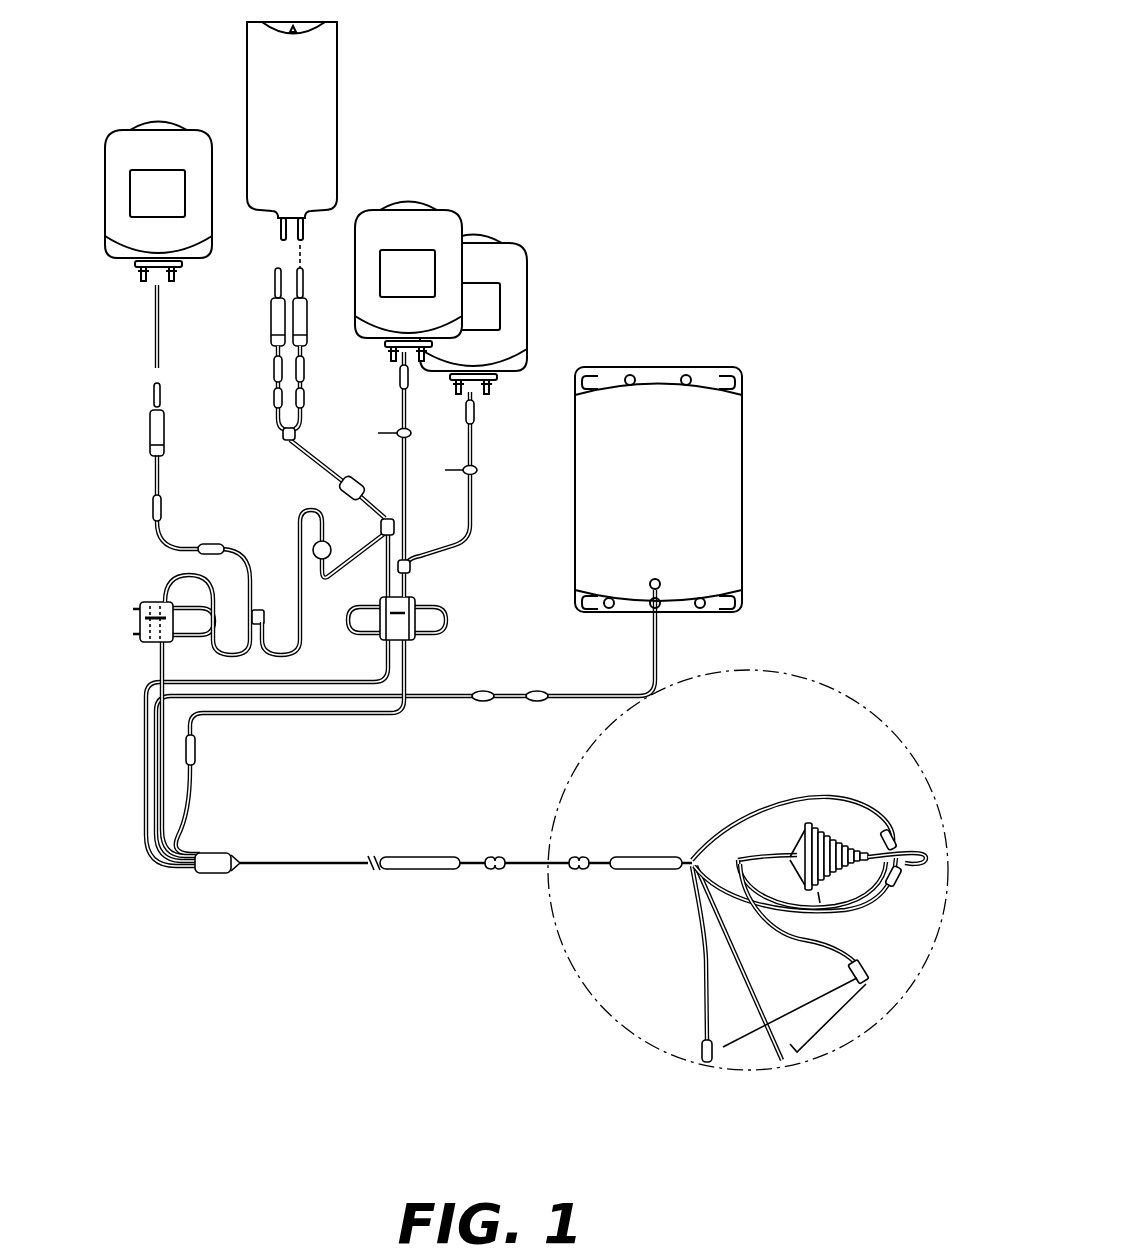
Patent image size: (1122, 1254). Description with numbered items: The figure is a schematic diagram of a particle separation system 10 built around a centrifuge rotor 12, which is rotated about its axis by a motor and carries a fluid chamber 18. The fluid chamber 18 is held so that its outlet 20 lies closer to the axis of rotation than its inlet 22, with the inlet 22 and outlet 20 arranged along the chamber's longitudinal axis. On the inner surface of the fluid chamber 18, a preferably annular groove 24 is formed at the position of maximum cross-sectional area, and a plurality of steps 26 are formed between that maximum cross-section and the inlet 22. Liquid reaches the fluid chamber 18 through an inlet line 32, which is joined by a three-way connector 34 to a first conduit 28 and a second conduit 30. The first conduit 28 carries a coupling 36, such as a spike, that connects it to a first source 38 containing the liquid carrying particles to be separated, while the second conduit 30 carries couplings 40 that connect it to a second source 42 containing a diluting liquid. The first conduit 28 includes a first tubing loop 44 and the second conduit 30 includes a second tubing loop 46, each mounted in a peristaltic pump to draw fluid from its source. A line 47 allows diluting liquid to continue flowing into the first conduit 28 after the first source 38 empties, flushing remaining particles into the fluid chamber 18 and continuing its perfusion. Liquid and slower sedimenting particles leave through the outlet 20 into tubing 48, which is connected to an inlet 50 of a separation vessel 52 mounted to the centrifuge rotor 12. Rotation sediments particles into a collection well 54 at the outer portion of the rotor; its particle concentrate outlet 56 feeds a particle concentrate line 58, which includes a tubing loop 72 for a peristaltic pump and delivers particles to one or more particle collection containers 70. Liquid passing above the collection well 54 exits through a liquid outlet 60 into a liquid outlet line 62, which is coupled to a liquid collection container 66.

The particle separation system 10 is at (657, 172).
The centrifuge rotor 12 is at (866, 708).
The fluid chamber 18 is at (821, 822).
The outlet 20 is at (792, 853).
The inlet 22 is at (867, 870).
The groove 24 is at (800, 852).
The steps 26 is at (828, 905).
The first conduit 28 is at (157, 490).
The second conduit 30 is at (297, 447).
The inlet line 32 is at (907, 870).
The three-way connector 34 is at (893, 840).
The coupling 36 is at (160, 395).
The first source 38 is at (128, 230).
The couplings 40 is at (302, 285).
The second source 42 is at (318, 155).
The first tubing loop 44 is at (182, 638).
The second tubing loop 46 is at (350, 617).
The line 47 is at (298, 528).
The tubing 48 is at (797, 938).
The inlet 50 is at (865, 972).
The separation vessel 52 is at (833, 997).
The collection well 54 is at (777, 1057).
The particle concentrate outlet 56 is at (790, 1060).
The particle concentrate line 58 is at (407, 678).
The liquid outlet 60 is at (710, 1047).
The liquid outlet line 62 is at (655, 652).
The liquid collection container 66 is at (715, 480).
The particle collection containers 70 is at (445, 232).
The tubing loop 72 is at (445, 615).